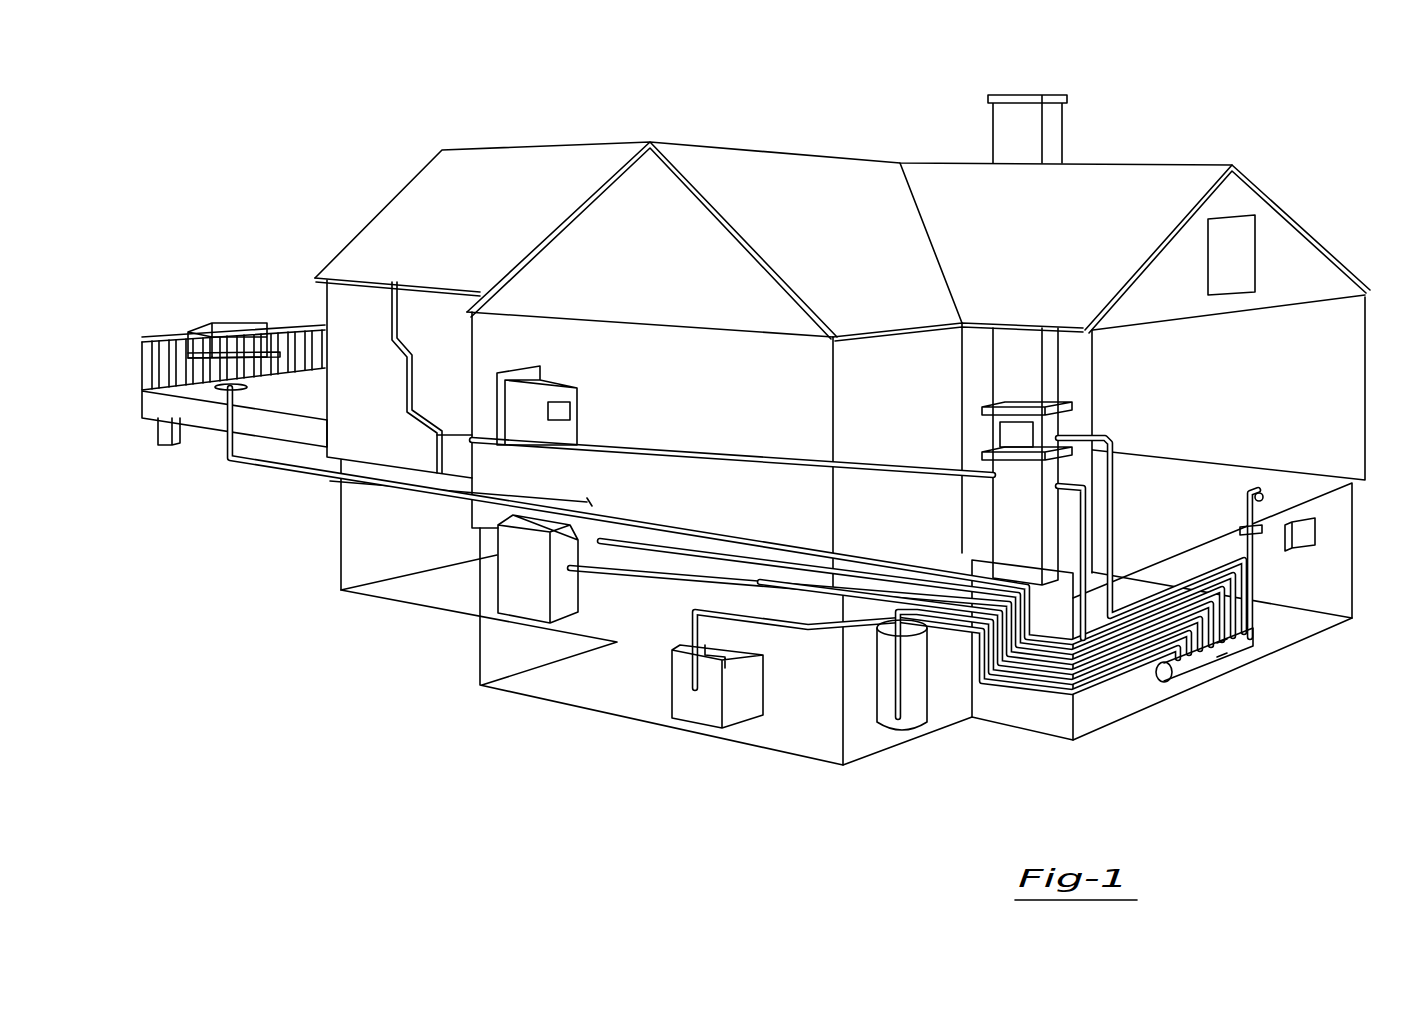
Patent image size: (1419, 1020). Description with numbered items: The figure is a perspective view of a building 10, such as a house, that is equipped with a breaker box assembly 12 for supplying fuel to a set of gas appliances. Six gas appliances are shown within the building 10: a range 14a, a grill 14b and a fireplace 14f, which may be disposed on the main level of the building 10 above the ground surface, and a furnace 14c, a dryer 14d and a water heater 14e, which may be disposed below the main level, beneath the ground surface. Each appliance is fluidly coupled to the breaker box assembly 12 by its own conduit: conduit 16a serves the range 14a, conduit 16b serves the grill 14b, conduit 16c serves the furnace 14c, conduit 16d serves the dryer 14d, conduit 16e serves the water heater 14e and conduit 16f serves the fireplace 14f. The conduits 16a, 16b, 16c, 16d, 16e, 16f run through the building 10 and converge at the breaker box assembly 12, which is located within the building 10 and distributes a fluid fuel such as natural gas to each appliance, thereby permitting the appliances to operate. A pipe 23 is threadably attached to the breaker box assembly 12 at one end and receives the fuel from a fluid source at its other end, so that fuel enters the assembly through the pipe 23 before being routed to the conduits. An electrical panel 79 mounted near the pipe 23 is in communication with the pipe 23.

The building 10 is at (900, 110).
The breaker box assembly 12 is at (1188, 675).
The range 14a is at (577, 398).
The grill 14b is at (220, 332).
The furnace 14c is at (512, 585).
The dryer 14d is at (700, 711).
The water heater 14e is at (880, 718).
The fireplace 14f is at (1062, 428).
The conduit 16a is at (772, 448).
The conduit 16b is at (240, 476).
The conduit 16c is at (654, 590).
The conduit 16d is at (802, 630).
The conduit 16e is at (1060, 680).
The conduit 16f is at (1112, 484).
The pipe 23 is at (1258, 598).
The electrical panel 79 is at (1318, 535).